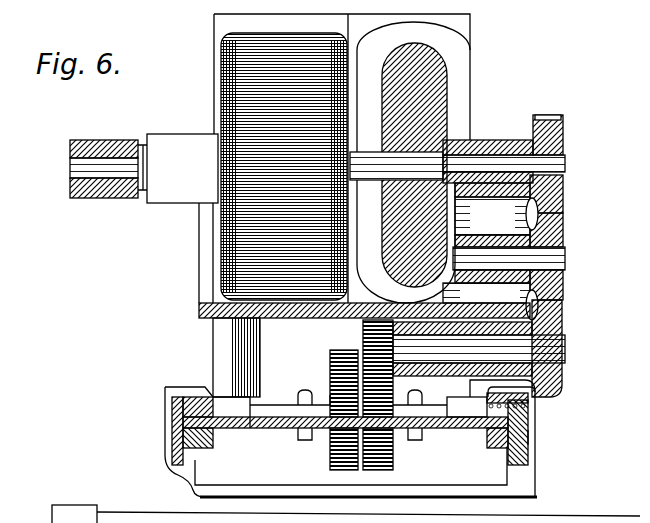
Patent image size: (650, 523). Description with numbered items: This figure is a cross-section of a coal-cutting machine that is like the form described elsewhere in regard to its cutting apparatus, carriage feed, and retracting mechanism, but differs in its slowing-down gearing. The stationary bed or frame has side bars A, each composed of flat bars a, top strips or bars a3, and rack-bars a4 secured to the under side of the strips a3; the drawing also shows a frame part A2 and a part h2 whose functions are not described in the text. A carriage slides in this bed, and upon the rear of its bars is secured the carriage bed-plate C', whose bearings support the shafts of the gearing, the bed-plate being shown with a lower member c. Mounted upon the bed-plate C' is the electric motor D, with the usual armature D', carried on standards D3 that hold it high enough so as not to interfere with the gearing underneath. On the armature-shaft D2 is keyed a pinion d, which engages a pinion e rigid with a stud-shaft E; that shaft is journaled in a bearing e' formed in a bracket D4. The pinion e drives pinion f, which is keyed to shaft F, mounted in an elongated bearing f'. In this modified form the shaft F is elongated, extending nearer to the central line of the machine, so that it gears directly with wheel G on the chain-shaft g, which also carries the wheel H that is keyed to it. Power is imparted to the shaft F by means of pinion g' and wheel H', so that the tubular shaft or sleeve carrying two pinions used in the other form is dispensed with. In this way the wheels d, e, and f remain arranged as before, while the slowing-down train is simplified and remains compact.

The electric motor D is at (319, 158).
The armature D' is at (284, 166).
The armature-shaft D2 is at (457, 161).
The standards D3 is at (214, 348).
The bracket D4 is at (565, 188).
The pinion d is at (564, 128).
The pinion e is at (553, 222).
The bearing e' is at (492, 215).
The stud-shaft E is at (566, 254).
The pinion f is at (510, 295).
The elongated bearing f' is at (467, 396).
The shaft F is at (566, 347).
The side bars A is at (528, 450).
The frame plate A2 is at (358, 330).
The flat bars a is at (528, 437).
The top strips a3 is at (512, 392).
The rack-bars a4 is at (530, 418).
The wheel H is at (327, 442).
The wheel H' is at (344, 419).
The bolt h2 is at (416, 440).
The bearing block c is at (199, 447).
The bed-plate C' is at (375, 443).
The chain-driving shaft g is at (292, 411).
The pinion g' is at (321, 388).
The wheel G is at (393, 462).